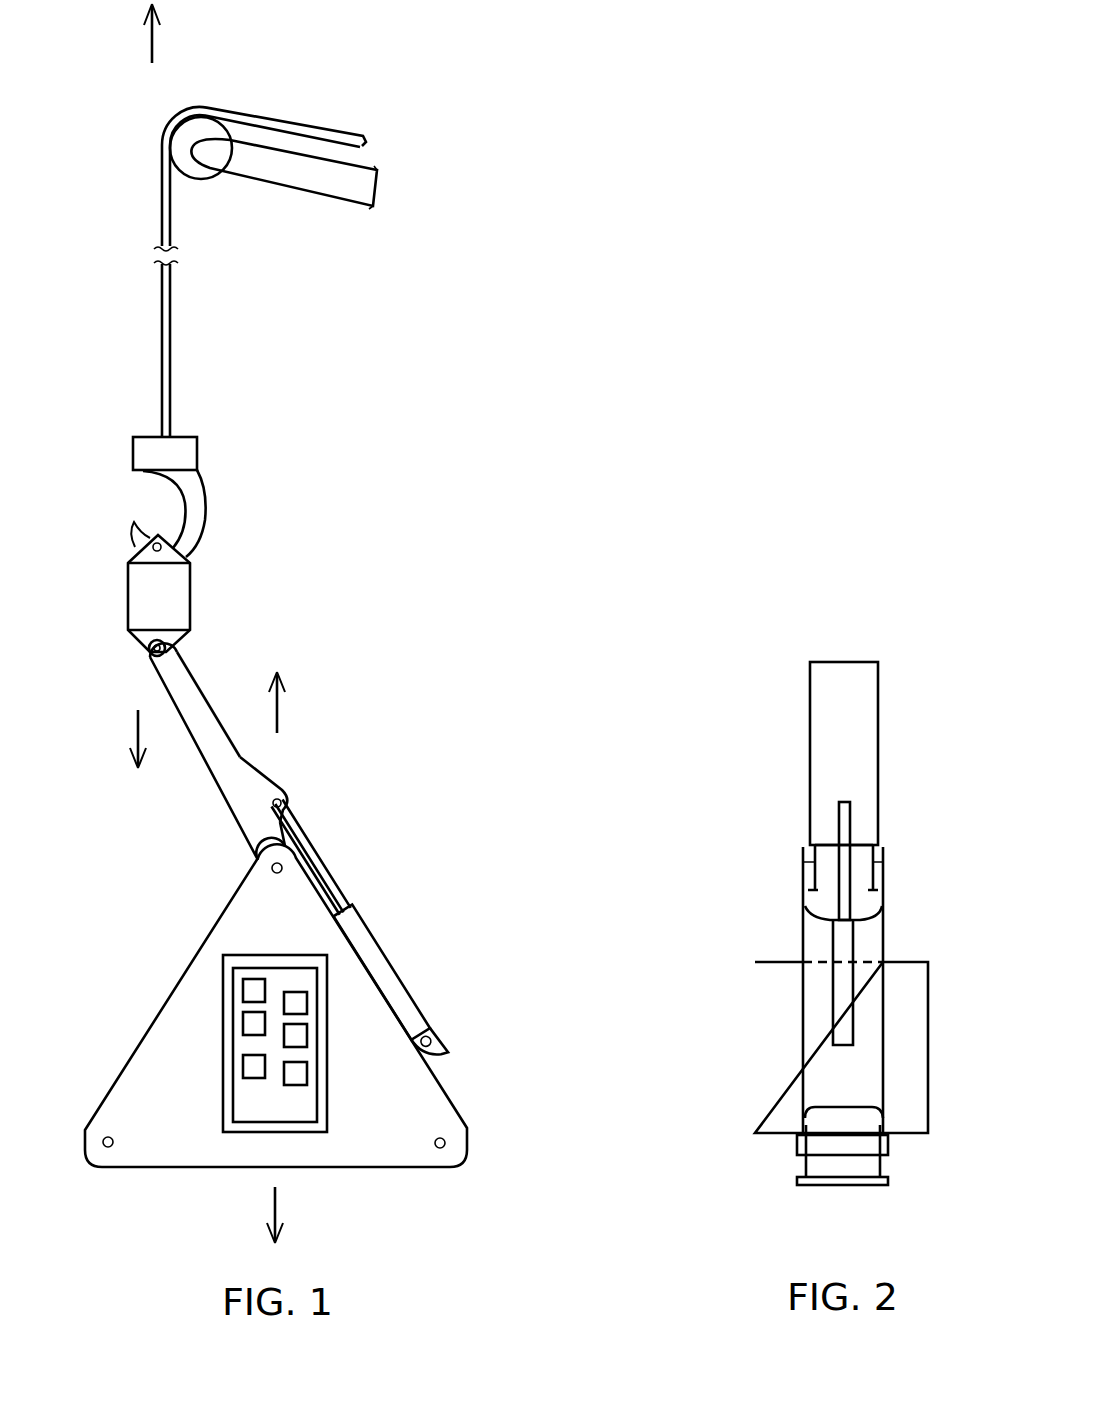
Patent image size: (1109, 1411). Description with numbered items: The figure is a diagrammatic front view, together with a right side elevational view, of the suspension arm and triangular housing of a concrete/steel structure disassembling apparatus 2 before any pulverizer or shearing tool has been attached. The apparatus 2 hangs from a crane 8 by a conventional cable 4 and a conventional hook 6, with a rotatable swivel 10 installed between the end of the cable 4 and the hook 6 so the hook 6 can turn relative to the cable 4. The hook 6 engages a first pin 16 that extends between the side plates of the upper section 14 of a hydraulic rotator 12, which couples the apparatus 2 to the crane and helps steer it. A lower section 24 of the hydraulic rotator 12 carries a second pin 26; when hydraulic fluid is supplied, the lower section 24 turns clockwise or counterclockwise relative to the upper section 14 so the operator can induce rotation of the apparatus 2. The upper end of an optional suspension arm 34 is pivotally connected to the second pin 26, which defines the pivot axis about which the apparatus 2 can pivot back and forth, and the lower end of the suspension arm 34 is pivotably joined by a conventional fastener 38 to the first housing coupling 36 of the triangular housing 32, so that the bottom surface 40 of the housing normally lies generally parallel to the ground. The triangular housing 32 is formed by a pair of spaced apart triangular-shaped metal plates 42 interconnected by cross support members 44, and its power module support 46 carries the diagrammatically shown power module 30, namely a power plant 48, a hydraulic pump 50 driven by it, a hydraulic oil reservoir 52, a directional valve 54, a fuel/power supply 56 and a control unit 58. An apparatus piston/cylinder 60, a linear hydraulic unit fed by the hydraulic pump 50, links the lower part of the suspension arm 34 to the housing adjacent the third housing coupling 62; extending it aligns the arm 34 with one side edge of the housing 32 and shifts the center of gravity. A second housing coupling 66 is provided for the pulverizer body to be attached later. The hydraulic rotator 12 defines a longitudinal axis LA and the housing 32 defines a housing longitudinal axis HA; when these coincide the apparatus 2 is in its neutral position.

In FIG. 1, the concrete/steel structure disassembling apparatus 2 is at (594, 312).
In FIG. 1, the cable 4 is at (168, 320).
In FIG. 1, the hook 6 is at (208, 510).
In FIG. 1, the crane 8 is at (305, 198).
In FIG. 1, the rotatable swivel 10 is at (198, 453).
In FIG. 1, the hydraulic rotator 12 is at (311, 597).
In FIG. 1, the upper section 14 is at (190, 568).
In FIG. 1, the first pin 16 is at (152, 536).
In FIG. 1, the lower section 24 is at (190, 632).
In FIG. 1, the second pin 26 is at (150, 655).
In FIG. 1, the power module 30 is at (332, 980).
In FIG. 2, the power module 30 is at (755, 972).
In FIG. 1, the triangular housing 32 is at (368, 1143).
In FIG. 1, the suspension arm 34 is at (205, 760).
In FIG. 1, the first housing coupling 36 is at (302, 833).
In FIG. 1, the fastener 38 is at (265, 868).
In FIG. 1, the bottom surface 40 is at (205, 1167).
In FIG. 2, the triangular-shaped metal plates 42 is at (803, 925).
In FIG. 2, the cross support members 44 is at (860, 855).
In FIG. 1, the power module support 46 is at (303, 1133).
In FIG. 1, the power plant 48 is at (253, 990).
In FIG. 1, the hydraulic pump 50 is at (300, 1002).
In FIG. 1, the hydraulic oil reservoir 52 is at (250, 1023).
In FIG. 1, the directional valve 54 is at (253, 1065).
In FIG. 1, the fuel/power supply 56 is at (300, 1036).
In FIG. 1, the control unit 58 is at (300, 1073).
In FIG. 1, the apparatus piston/cylinder 60 is at (388, 967).
In FIG. 2, the apparatus piston/cylinder 60 is at (833, 1020).
In FIG. 1, the third housing coupling 62 is at (467, 1152).
In FIG. 1, the second housing coupling 66 is at (85, 1150).
In FIG. 1, the longitudinal axis LA is at (157, 33).
In FIG. 1, the housing longitudinal axis HA is at (280, 712).